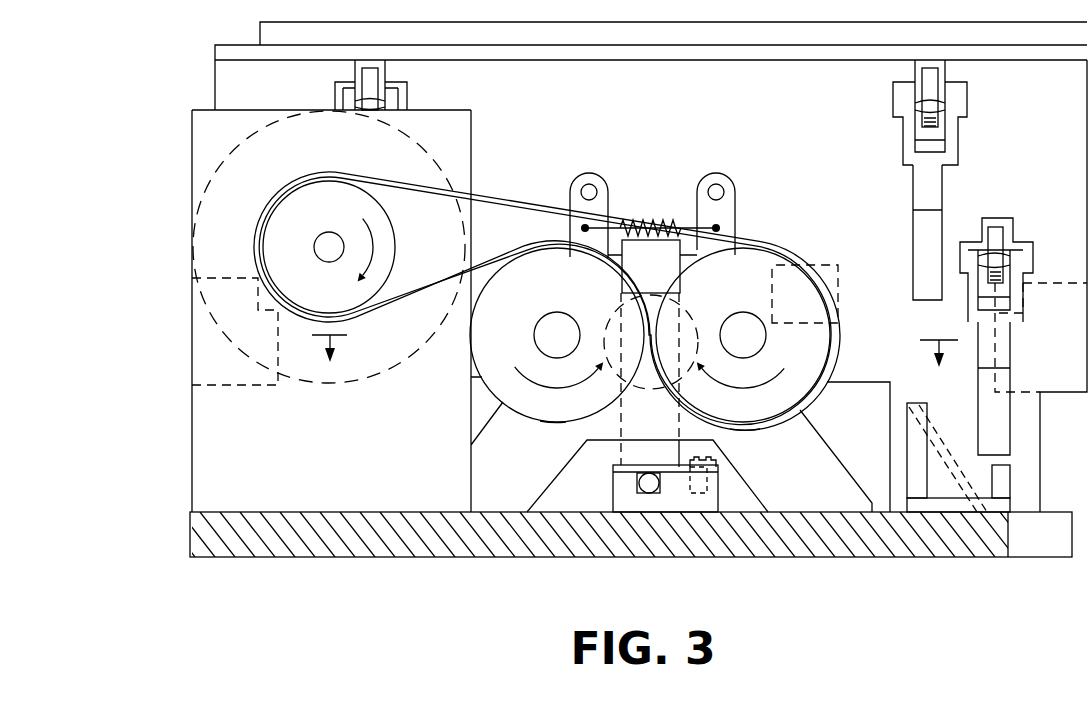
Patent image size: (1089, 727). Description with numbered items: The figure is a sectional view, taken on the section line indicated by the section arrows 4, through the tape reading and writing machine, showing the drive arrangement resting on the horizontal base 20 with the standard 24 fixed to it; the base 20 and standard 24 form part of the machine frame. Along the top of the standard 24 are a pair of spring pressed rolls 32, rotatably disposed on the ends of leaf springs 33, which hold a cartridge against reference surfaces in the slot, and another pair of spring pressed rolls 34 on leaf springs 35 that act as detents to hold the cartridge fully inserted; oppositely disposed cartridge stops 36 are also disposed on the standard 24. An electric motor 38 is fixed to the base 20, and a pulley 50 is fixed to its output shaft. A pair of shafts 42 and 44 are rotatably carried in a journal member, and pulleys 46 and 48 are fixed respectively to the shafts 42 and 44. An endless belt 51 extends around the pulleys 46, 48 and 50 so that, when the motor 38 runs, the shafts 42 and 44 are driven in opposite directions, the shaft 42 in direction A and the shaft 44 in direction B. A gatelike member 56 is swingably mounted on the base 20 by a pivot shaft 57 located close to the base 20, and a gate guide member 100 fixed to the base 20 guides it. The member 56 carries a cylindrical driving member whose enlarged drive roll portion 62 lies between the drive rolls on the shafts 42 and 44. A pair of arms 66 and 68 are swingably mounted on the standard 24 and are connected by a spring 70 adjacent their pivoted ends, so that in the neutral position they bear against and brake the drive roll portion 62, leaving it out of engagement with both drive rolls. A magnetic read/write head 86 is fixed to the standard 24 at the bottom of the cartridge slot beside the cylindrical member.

The section line 4- 4 is at (635, 364).
The base 20 is at (886, 558).
The standard 24 is at (641, 126).
The spring pressed rolls 32 is at (382, 72).
The leaf springs 33 is at (913, 181).
The spring pressed rolls 34 is at (995, 228).
The leaf springs 35 is at (1010, 352).
The cartridge stops 36 is at (278, 305).
The electric motor 38 is at (343, 385).
The shaft 42 is at (560, 312).
The shaft 44 is at (746, 312).
The pulley 46 is at (553, 422).
The pulley 48 is at (747, 430).
The pulley 50 is at (400, 248).
The endless belt 51 is at (512, 200).
The gatelike member 56 is at (640, 274).
The pivot shaft 57 is at (649, 493).
The drive roll portion 62 is at (652, 387).
The arm 66 is at (570, 232).
The arm 68 is at (735, 216).
The spring 70 is at (660, 224).
The magnetic read/write head 86 is at (824, 265).
The gate guide member 100 is at (944, 446).